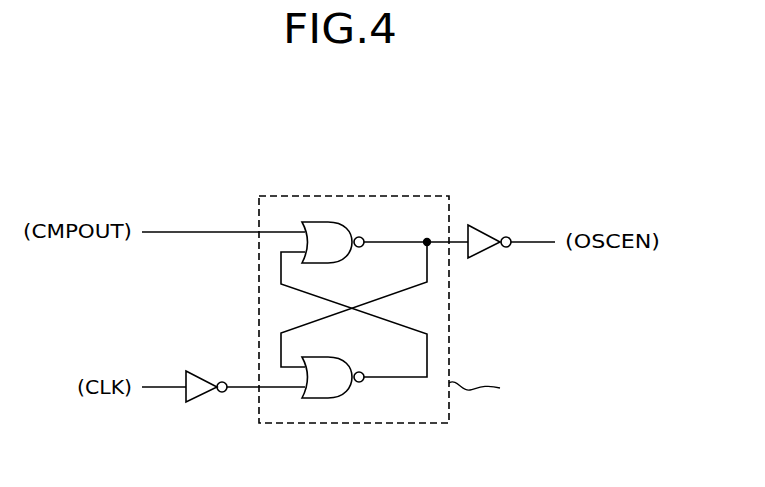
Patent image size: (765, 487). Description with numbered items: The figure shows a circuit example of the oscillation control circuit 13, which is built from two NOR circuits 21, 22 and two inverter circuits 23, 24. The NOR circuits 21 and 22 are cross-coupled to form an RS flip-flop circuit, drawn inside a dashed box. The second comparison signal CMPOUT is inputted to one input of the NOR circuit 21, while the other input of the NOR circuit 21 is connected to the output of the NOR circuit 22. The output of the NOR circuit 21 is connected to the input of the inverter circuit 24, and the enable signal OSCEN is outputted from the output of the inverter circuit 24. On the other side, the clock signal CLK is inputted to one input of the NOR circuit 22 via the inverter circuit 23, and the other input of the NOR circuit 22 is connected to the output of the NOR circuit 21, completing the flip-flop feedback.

The oscillation control circuit 13 is at (432, 173).
The NOR circuit 21 is at (330, 221).
The NOR circuit 22 is at (327, 399).
The inverter circuit 23 is at (198, 396).
The inverter circuit 24 is at (480, 256).